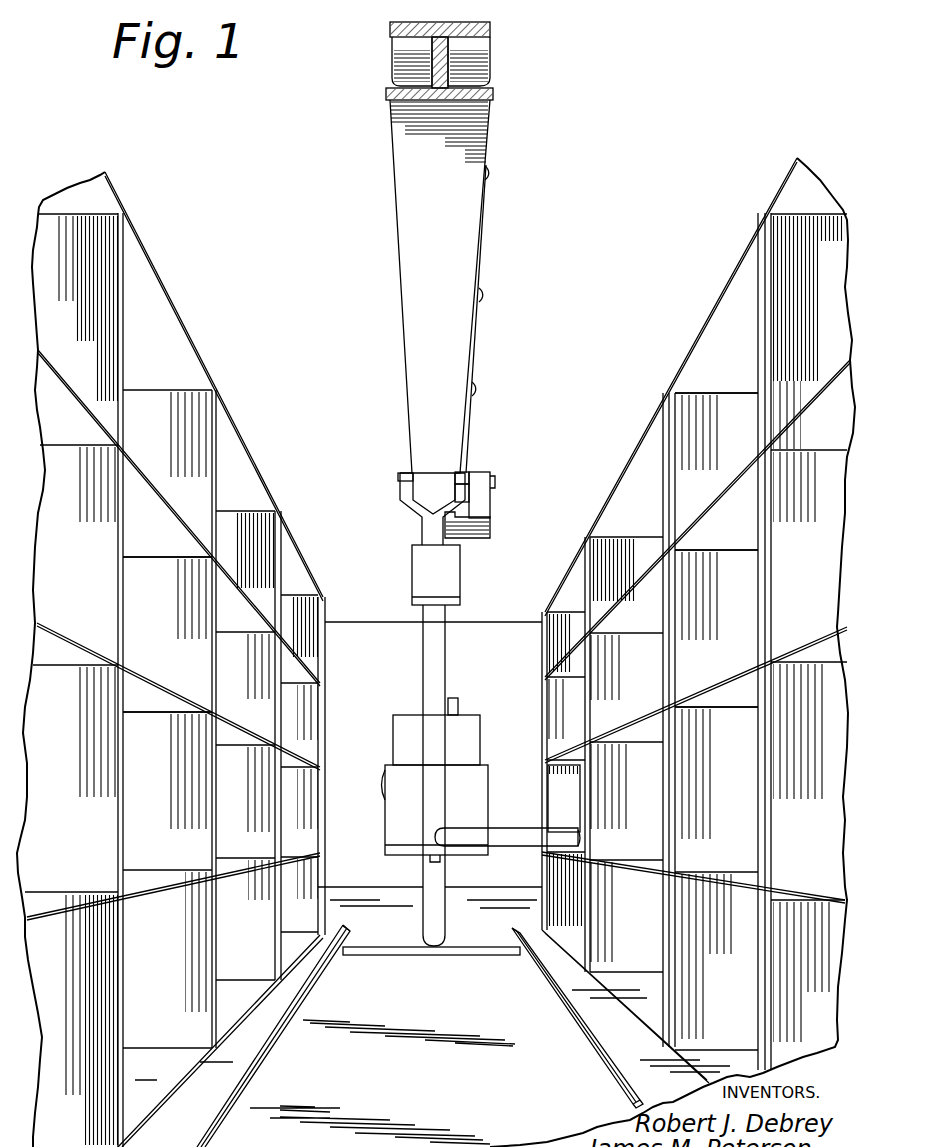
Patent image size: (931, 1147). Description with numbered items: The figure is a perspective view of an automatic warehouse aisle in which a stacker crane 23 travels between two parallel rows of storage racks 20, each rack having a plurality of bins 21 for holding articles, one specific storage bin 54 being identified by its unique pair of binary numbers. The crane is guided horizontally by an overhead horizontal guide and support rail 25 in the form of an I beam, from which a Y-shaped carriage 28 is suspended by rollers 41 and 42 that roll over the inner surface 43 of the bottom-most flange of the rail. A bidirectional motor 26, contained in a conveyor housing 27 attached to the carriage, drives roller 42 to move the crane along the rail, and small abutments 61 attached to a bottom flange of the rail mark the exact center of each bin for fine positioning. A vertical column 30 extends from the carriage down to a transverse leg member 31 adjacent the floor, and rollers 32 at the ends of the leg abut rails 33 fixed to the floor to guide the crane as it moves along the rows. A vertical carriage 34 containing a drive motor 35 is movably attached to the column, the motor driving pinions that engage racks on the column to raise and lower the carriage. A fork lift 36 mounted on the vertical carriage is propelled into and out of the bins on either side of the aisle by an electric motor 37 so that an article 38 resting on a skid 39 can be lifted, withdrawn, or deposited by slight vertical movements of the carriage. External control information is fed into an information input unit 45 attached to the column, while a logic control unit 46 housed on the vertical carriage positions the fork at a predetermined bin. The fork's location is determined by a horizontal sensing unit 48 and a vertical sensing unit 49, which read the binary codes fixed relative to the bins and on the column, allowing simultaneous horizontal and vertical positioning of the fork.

The storage rack 20 is at (240, 438).
The bin 21 is at (168, 652).
The stacker crane 23 is at (480, 681).
The overhead horizontal guide and support rail 25 is at (465, 236).
The motor 26 is at (493, 483).
The conveyor housing 27 is at (486, 507).
The Y-shaped carriage 28 is at (412, 508).
The column 30 is at (444, 665).
The transverse leg member 31 is at (479, 951).
The rollers 32 is at (345, 950).
The rails 33 is at (272, 1048).
The vertical carriage 34 is at (450, 813).
The drive motor 35 is at (383, 792).
The fork lift 36 is at (505, 840).
The electric motor 37 is at (445, 860).
The article 38 is at (575, 811).
The skid 39 is at (579, 846).
The roller 41 is at (406, 473).
The roller 42 is at (463, 472).
The inner surface 43 is at (402, 83).
The information input unit 45 is at (448, 586).
The logic control unit 46 is at (448, 753).
The horizontal sensing unit 48 is at (457, 498).
The vertical sensing unit 49 is at (456, 700).
The storage bin 54 is at (722, 436).
The abutment 61 is at (480, 290).